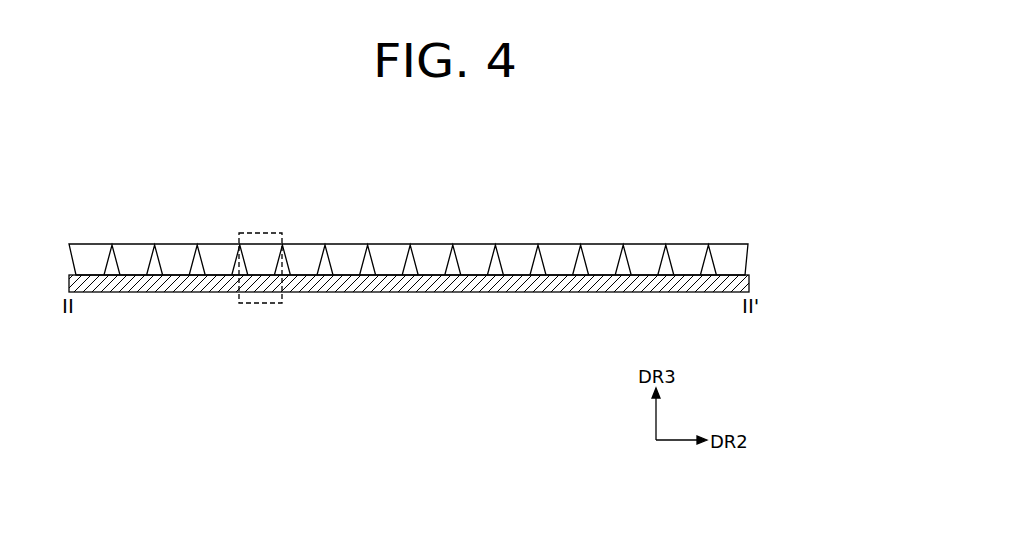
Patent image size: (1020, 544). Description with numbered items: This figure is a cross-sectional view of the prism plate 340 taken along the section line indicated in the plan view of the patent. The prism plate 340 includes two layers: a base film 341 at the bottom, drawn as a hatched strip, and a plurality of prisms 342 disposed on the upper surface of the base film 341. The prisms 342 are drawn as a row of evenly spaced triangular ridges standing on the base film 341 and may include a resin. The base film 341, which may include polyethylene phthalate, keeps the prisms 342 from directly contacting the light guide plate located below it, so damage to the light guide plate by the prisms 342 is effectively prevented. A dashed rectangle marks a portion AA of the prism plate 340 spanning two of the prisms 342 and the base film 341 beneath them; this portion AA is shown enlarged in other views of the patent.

The prism plate 340 is at (469, 271).
The base film 341 is at (737, 280).
The prisms 342 is at (735, 254).
The portion AA is at (268, 233).